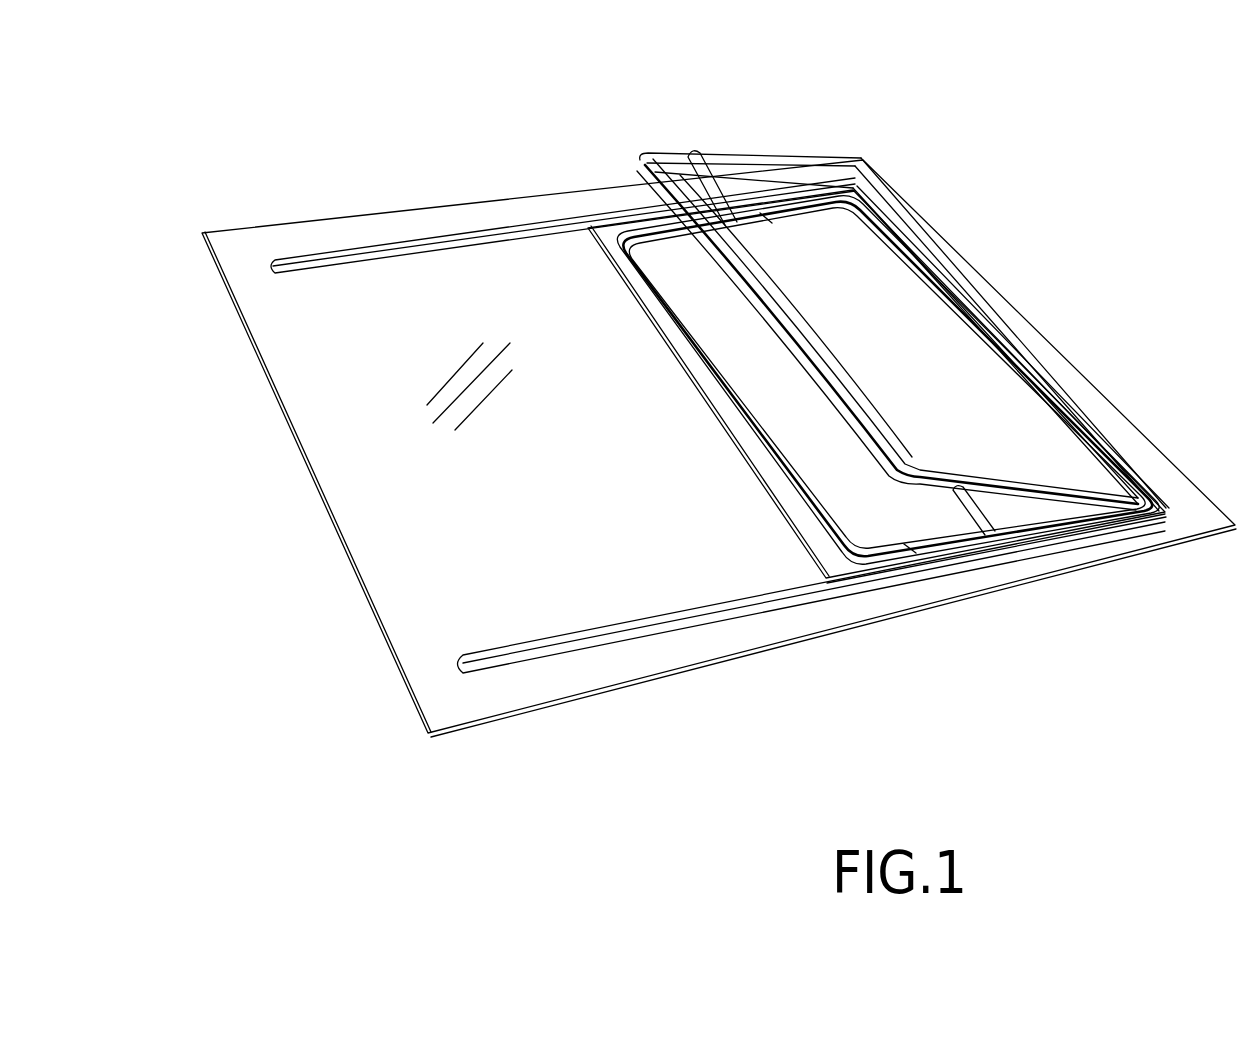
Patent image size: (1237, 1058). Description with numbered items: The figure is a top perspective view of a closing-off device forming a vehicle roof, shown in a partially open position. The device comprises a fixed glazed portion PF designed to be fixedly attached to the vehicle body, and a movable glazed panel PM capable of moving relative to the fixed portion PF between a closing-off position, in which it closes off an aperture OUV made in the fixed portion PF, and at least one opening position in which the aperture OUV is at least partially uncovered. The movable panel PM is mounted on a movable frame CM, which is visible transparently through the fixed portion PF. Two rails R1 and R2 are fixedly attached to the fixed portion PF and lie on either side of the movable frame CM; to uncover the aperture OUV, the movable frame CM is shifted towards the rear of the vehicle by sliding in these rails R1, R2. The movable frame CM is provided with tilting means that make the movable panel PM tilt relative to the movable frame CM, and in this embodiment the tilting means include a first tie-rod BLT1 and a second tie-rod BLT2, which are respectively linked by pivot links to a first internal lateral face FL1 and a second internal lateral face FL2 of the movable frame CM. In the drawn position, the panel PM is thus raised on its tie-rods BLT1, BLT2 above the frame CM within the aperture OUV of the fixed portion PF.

The fixed glazed portion PF is at (347, 405).
The movable glazed panel PM is at (862, 300).
The aperture OUV is at (688, 296).
The movable frame CM is at (862, 560).
The rail R1 is at (345, 258).
The rail R2 is at (531, 652).
The first tie-rod BLT1 is at (723, 197).
The second tie-rod BLT2 is at (993, 518).
The first internal lateral face FL1 is at (765, 216).
The second internal lateral face FL2 is at (913, 548).